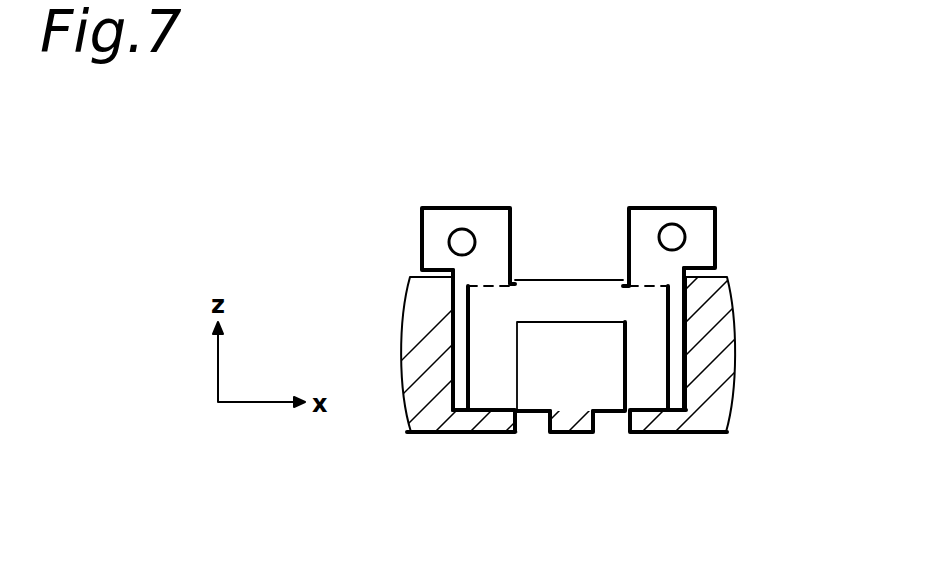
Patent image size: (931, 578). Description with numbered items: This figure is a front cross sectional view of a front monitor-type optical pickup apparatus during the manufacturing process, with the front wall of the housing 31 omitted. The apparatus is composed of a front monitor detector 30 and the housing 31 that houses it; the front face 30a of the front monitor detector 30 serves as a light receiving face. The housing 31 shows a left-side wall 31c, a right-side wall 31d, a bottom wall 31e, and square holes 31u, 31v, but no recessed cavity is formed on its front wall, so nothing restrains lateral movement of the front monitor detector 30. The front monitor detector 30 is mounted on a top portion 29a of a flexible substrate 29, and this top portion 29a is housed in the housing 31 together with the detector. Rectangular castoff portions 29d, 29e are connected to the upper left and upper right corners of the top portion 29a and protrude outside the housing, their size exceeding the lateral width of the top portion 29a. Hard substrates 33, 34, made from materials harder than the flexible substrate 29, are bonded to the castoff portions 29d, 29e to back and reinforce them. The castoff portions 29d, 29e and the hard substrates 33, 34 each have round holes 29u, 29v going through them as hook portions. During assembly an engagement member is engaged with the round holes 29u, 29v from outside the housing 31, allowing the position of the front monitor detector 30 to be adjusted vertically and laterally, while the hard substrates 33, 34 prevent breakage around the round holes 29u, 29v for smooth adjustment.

The flexible substrate 29 is at (572, 290).
The top portion 29a is at (520, 305).
The castoff portion 29d is at (422, 235).
The castoff portion 29e is at (697, 208).
The round hole 29u is at (462, 229).
The round hole 29v is at (672, 224).
The front monitor detector 30 is at (605, 343).
The front face 30a is at (550, 367).
The housing 31 is at (575, 382).
The left-side wall 31c is at (417, 330).
The right-side wall 31d is at (717, 343).
The bottom wall 31e is at (480, 437).
The square hole 31u is at (533, 432).
The square hole 31v is at (610, 428).
The hard substrate 33 is at (422, 248).
The hard substrate 34 is at (718, 222).